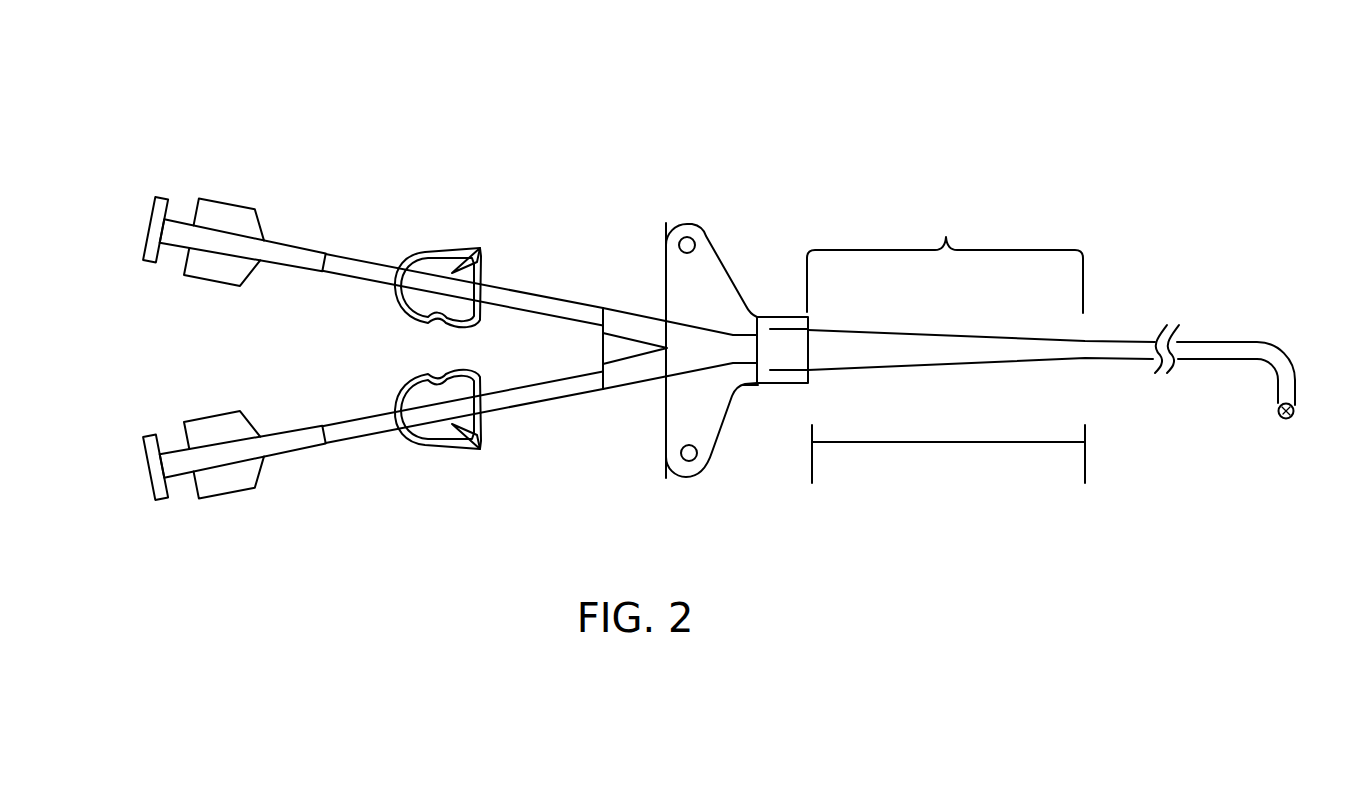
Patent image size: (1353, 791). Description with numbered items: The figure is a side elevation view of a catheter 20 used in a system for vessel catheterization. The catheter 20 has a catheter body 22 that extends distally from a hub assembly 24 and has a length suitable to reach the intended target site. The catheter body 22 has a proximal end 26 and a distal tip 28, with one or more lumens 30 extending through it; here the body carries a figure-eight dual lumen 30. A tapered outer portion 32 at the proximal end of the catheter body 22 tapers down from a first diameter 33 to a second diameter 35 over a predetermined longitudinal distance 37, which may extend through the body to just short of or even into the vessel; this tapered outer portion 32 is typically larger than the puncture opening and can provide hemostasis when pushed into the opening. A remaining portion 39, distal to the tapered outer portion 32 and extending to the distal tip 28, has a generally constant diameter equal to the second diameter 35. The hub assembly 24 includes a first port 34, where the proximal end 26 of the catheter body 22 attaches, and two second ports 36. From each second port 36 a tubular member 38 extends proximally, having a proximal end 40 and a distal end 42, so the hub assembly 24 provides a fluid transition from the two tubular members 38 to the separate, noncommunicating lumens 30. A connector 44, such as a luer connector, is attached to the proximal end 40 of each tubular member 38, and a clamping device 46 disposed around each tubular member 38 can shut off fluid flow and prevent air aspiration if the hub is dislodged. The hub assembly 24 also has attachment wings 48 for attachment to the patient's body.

The catheter 20 is at (808, 140).
The catheter body 22 is at (1027, 365).
The hub assembly 24 is at (743, 390).
The proximal end 26 is at (880, 410).
The distal tip 28 is at (1295, 410).
The lumen 30 is at (1288, 420).
The tapered outer portion 32 is at (945, 258).
The first diameter 33 is at (782, 420).
The first port 34 is at (817, 347).
The second diameter 35 is at (1084, 400).
The second port 36 is at (579, 292).
The longitudinal distance 37 is at (947, 442).
The tubular member 38 is at (494, 297).
The remaining portion 39 is at (1213, 320).
The proximal end 40 is at (312, 228).
The distal end 42 is at (603, 310).
The connector 44 is at (215, 215).
The clamping device 46 is at (449, 255).
The attachment wing 48 is at (705, 267).